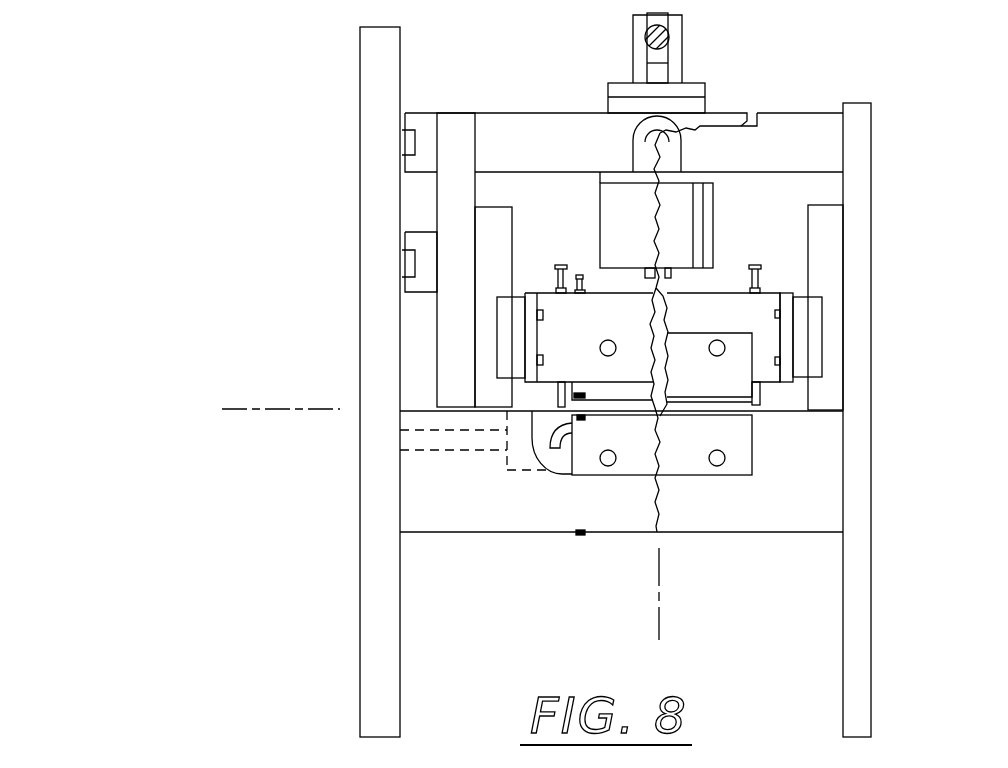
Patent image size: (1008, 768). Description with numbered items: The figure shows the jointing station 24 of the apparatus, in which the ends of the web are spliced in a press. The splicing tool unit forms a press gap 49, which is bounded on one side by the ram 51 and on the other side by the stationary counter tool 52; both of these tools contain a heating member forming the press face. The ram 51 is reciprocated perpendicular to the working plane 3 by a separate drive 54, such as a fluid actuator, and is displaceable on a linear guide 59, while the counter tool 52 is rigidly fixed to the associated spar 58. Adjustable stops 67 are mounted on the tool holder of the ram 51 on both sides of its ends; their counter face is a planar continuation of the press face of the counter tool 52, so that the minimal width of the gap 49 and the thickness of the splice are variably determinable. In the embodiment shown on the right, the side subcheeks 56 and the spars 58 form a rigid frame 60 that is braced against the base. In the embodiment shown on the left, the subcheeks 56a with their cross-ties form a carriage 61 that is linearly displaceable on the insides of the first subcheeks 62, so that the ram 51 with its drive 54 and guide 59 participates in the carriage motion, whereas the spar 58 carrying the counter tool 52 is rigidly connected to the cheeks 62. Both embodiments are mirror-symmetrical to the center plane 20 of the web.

The working plane 3 is at (287, 409).
The center plane 20 is at (655, 618).
The station 24 is at (724, 255).
The press gap 49 is at (723, 406).
The ram 51 is at (625, 392).
The counter tool 52 is at (677, 437).
The drive 54 is at (623, 230).
The subcheek 56 is at (847, 607).
The subcheek 56a is at (455, 124).
The spar 58 is at (500, 513).
The guide 59 is at (797, 259).
The rigid frame 60 is at (775, 82).
The carriage 61 is at (537, 82).
The first subcheek 62 is at (395, 662).
The adjustable stop 67 is at (552, 387).